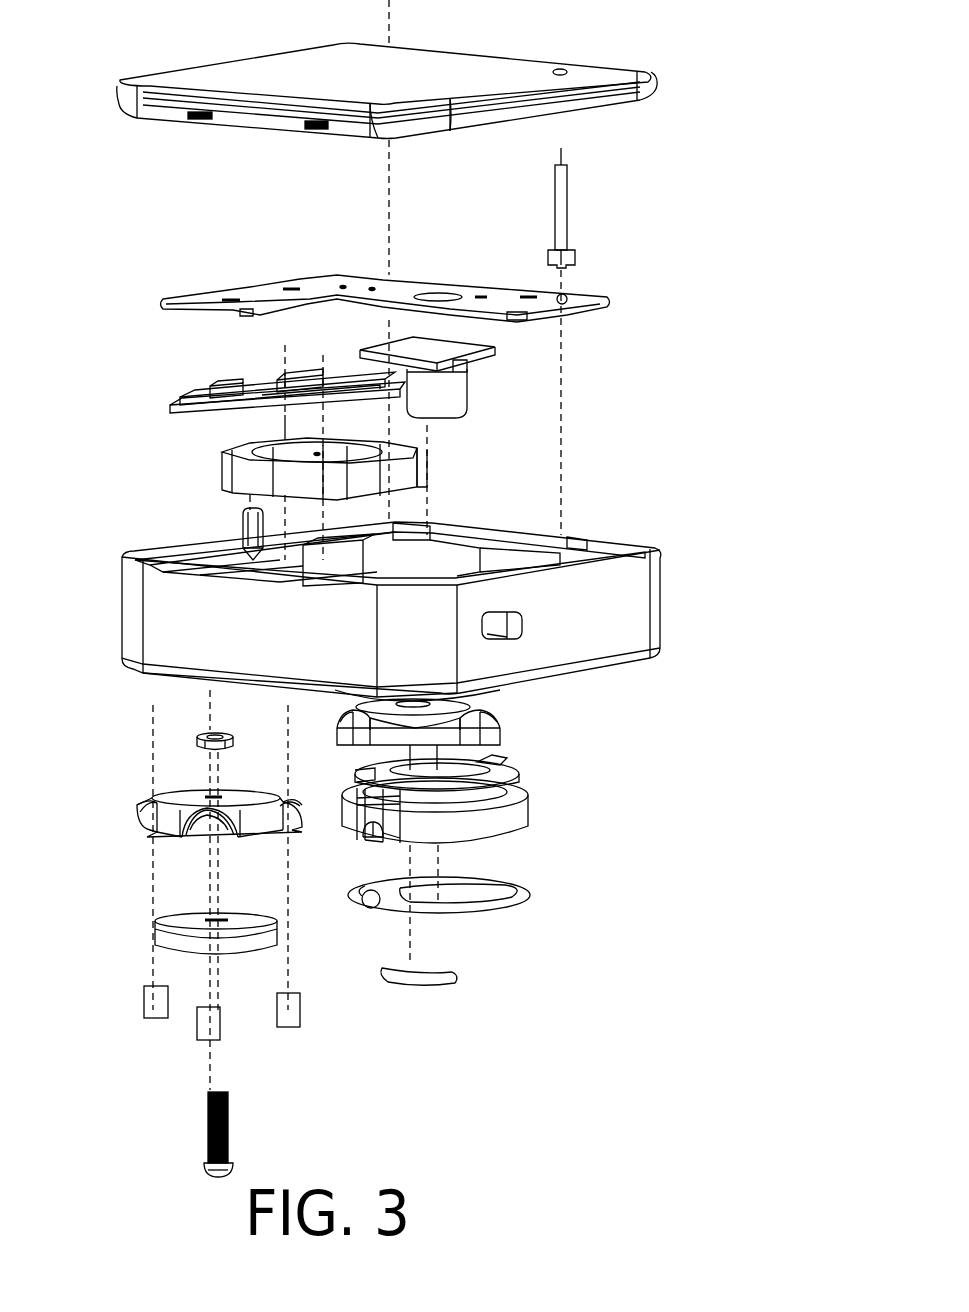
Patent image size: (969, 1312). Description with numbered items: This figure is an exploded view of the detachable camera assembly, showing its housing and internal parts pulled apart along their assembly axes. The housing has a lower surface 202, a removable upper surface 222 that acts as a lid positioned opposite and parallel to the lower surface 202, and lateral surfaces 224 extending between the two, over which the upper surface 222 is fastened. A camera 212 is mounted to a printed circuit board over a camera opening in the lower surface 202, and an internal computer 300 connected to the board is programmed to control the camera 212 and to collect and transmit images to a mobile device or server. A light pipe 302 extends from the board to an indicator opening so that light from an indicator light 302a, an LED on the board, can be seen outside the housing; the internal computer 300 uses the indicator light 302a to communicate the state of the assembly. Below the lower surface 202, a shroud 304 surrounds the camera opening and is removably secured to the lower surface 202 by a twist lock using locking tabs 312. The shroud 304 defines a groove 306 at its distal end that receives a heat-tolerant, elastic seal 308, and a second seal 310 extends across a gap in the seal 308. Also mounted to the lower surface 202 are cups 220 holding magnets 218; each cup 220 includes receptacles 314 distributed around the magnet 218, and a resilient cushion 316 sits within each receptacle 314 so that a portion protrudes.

The lower surface 202 is at (578, 678).
The camera 212 is at (462, 372).
The magnet 218 is at (243, 942).
The cup 220 is at (418, 728).
The upper surface 222 is at (518, 74).
The lateral surfaces 224 is at (207, 558).
The internal computer 300 is at (215, 384).
The light pipe 302 is at (563, 188).
The indicator light 302a is at (570, 300).
The shroud 304 is at (512, 815).
The groove 306 is at (398, 836).
The seal 308 is at (518, 900).
The second seal 310 is at (445, 970).
The locking tabs 312 is at (360, 772).
The receptacles 314 is at (345, 725).
The cushion 316 is at (158, 1008).